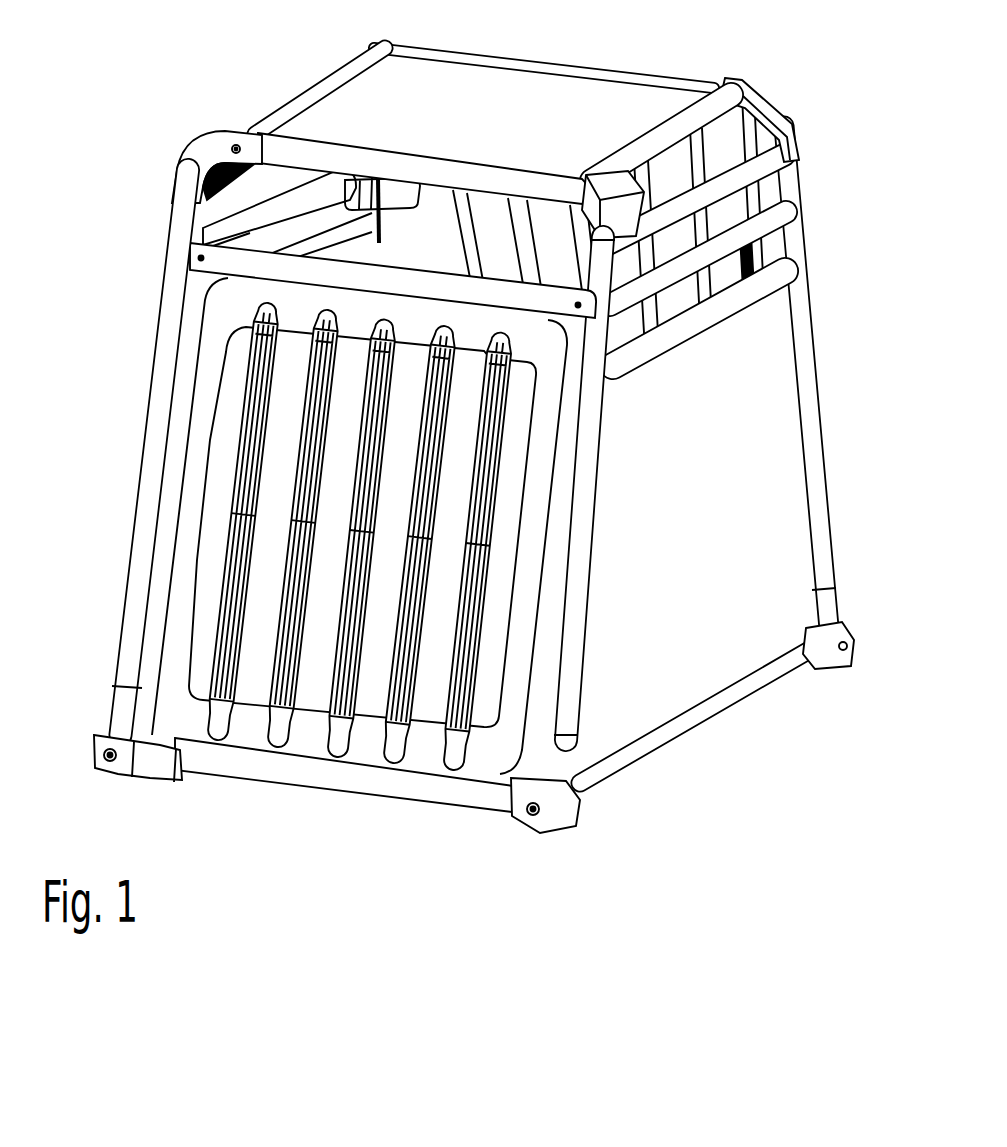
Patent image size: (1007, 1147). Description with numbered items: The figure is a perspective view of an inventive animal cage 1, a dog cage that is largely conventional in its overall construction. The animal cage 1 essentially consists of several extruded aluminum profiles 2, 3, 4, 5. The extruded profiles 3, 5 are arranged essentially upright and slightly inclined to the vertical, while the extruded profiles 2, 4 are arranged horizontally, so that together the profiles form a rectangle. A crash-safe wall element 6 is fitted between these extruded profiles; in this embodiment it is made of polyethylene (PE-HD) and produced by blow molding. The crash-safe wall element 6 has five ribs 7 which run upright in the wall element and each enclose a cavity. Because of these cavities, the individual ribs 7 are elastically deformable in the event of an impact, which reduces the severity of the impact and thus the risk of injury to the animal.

The animal cage 1 is at (461, 519).
The extruded aluminum profile 2 is at (250, 262).
The extruded aluminum profile 3 is at (568, 603).
The extruded aluminum profile 4 is at (360, 782).
The extruded aluminum profile 5 is at (146, 542).
The crash-safe wall element 6 is at (178, 462).
The rib 7 is at (290, 566).